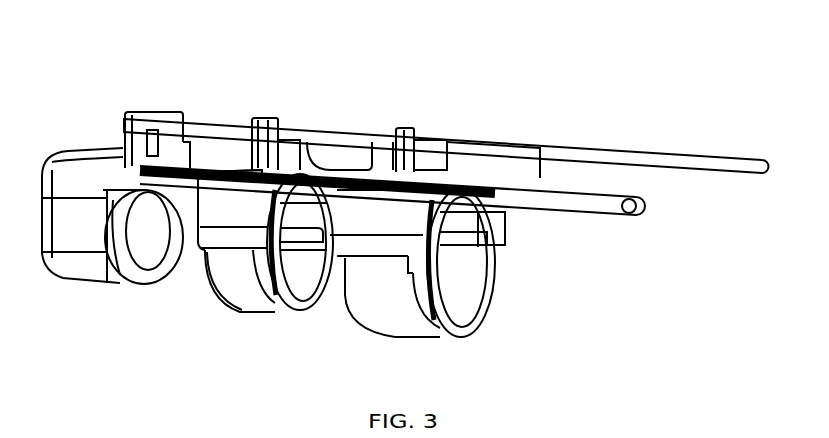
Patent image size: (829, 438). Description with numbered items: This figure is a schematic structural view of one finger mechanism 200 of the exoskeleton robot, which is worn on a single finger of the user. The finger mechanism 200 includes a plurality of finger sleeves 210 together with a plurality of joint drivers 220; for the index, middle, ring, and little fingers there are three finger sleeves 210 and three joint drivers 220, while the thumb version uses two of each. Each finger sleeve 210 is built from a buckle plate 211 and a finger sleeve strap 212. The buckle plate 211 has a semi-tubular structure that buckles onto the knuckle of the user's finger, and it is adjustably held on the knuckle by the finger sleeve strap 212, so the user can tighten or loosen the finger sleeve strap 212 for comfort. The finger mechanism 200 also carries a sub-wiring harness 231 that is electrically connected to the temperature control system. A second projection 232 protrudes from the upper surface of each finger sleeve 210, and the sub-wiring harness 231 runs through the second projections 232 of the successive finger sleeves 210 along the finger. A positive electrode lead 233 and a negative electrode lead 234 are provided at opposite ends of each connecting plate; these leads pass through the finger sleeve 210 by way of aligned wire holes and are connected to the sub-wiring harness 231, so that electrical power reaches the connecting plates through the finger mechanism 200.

The finger mechanism 200 is at (660, 31).
The finger sleeve 210 is at (93, 262).
The buckle plate 211 is at (217, 237).
The finger sleeve strap 212 is at (247, 295).
The joint driver 220 is at (185, 126).
The sub-wiring harness 231 is at (522, 140).
The second projection 232 is at (405, 130).
The positive electrode lead 233 is at (216, 130).
The negative electrode lead 234 is at (128, 118).